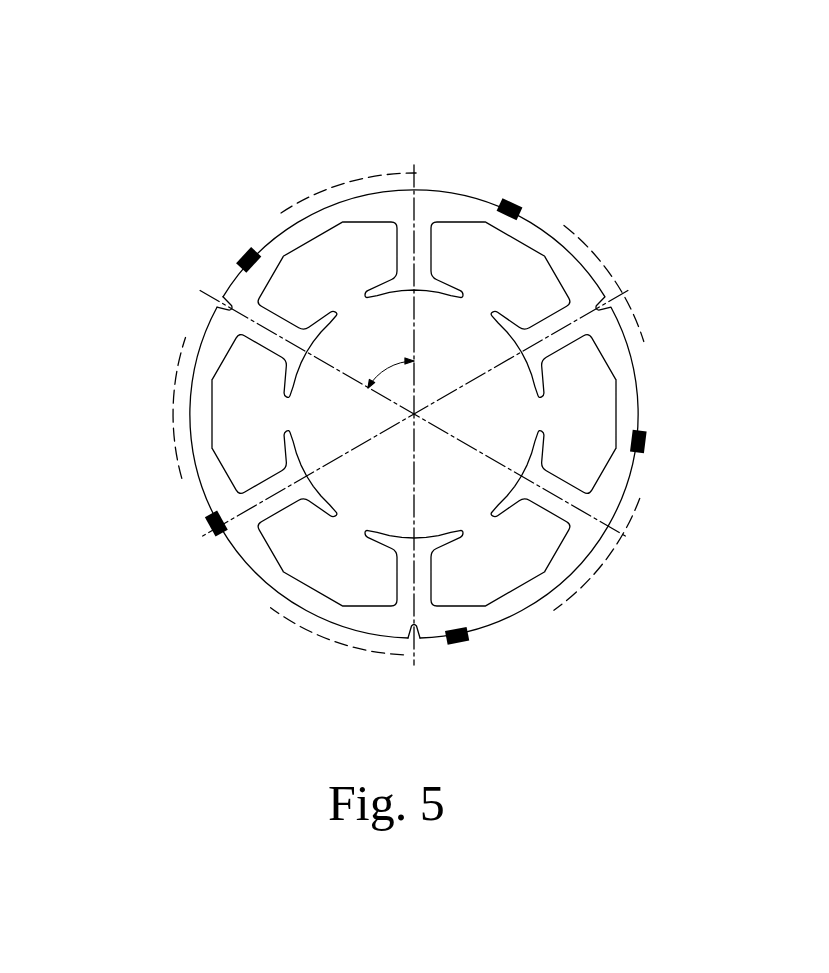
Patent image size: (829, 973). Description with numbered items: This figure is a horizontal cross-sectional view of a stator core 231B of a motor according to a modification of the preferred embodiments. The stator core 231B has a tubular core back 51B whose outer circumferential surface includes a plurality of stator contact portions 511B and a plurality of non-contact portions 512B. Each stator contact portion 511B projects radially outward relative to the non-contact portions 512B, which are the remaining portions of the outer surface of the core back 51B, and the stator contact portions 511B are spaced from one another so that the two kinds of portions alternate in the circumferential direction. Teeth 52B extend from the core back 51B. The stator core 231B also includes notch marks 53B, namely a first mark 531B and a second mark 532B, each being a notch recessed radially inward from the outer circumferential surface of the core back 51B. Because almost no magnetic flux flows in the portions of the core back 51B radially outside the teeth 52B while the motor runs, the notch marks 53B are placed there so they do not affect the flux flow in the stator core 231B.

The stator core 231B is at (266, 127).
The core back 51B is at (530, 232).
The stator contact portions 511B is at (606, 272).
The non-contact portions 512B is at (644, 398).
The teeth 52B is at (400, 583).
The notch marks 53B is at (116, 628).
The first mark 531B is at (214, 306).
The second mark 532B is at (410, 646).